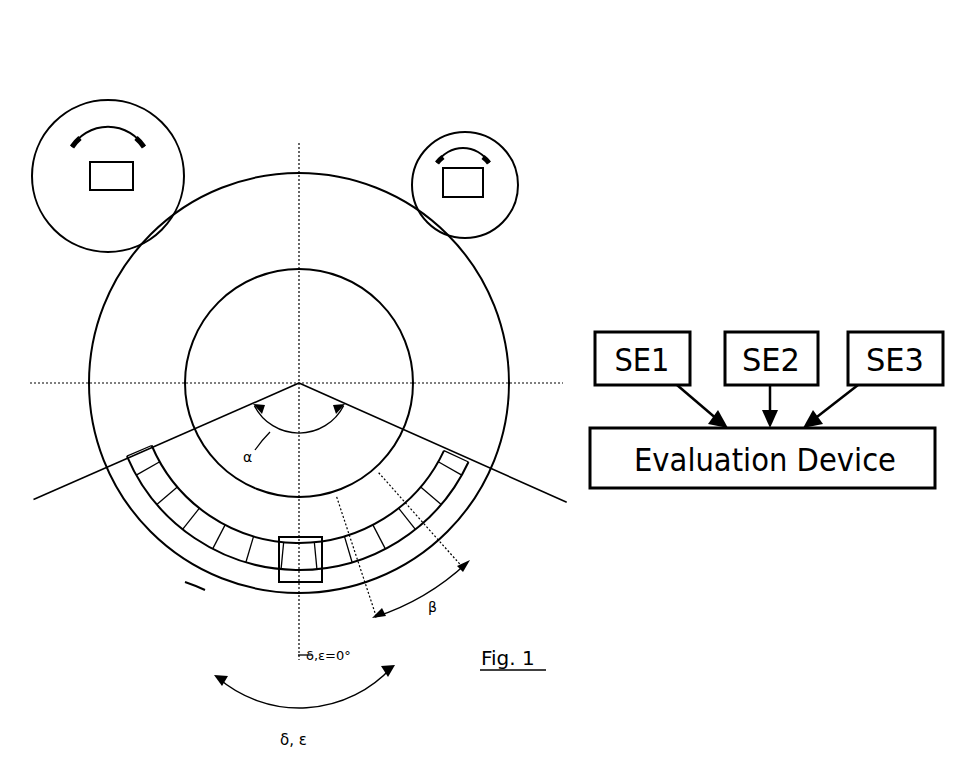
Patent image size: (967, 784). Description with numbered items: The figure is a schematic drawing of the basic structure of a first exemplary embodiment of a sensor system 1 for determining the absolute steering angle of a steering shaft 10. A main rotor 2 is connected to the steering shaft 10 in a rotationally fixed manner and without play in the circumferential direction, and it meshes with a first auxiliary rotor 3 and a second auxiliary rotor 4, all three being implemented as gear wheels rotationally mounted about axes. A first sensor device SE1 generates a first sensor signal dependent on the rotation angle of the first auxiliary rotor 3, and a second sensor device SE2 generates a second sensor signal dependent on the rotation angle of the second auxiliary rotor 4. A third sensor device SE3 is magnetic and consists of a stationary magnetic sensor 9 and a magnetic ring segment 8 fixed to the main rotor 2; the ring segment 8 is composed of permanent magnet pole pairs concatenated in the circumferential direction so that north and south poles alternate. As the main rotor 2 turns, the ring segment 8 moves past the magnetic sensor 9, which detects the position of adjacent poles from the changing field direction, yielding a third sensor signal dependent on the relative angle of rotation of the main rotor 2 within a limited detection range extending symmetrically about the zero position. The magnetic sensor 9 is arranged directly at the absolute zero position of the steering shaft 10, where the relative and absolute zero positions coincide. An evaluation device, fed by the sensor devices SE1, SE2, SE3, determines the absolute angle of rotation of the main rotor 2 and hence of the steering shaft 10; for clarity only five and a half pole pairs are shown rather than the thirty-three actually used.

The sensor system 1 is at (379, 114).
The main rotor 2 is at (473, 307).
The first auxiliary rotor 3 is at (127, 146).
The second auxiliary rotor 4 is at (489, 159).
The magnetic ring segment 8 is at (143, 515).
The magnetic sensor 9 is at (283, 590).
The steering shaft 10 is at (357, 331).
The first sensor device SE1 is at (120, 173).
The second sensor device SE2 is at (473, 183).
The third sensor device SE3 is at (190, 579).